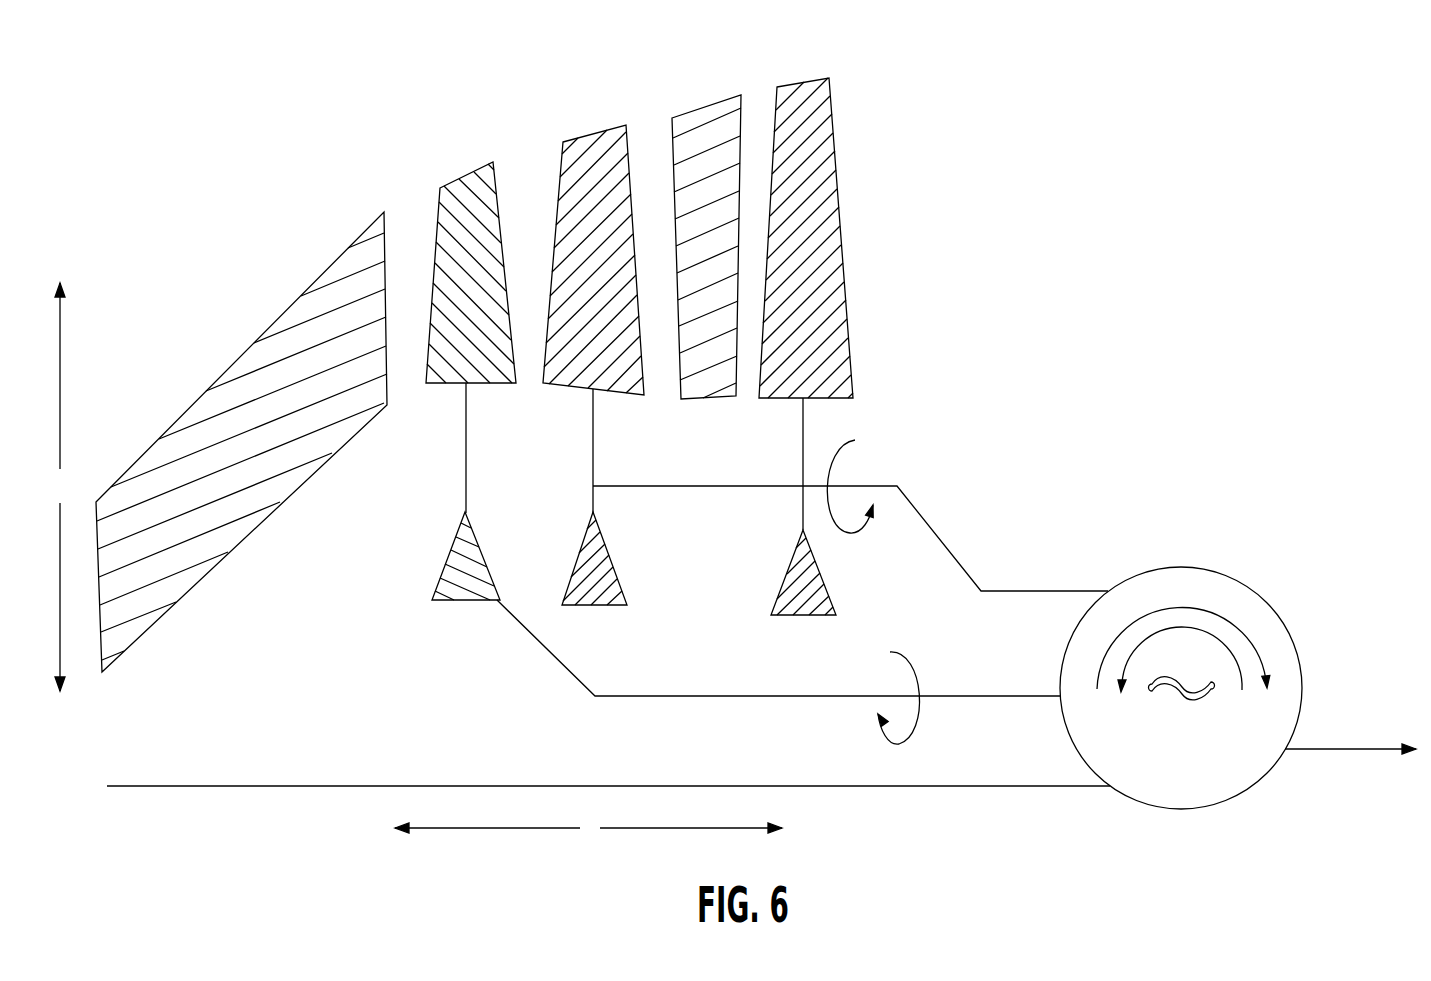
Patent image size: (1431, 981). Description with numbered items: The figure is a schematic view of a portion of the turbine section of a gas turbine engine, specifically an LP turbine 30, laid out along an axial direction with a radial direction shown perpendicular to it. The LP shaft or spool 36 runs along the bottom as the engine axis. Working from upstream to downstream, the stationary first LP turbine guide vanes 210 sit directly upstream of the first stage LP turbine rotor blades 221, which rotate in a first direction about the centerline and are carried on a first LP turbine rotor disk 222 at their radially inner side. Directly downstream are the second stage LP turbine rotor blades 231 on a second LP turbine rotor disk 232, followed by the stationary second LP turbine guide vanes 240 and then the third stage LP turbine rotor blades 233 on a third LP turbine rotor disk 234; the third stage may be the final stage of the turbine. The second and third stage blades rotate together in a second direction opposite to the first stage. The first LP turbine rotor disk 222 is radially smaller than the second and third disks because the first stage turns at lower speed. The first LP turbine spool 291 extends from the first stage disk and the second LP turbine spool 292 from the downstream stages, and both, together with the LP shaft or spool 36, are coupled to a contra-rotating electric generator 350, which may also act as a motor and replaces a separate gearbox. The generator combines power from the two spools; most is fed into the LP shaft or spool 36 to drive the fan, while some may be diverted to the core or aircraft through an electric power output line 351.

The LP turbine 30 is at (242, 127).
The LP shaft or spool 36 is at (253, 785).
The first LP turbine guide vanes 210 is at (206, 406).
The first stage LP turbine rotor blades 221 is at (465, 188).
The first LP turbine rotor disk 222 is at (457, 555).
The second stage LP turbine rotor blades 231 is at (575, 143).
The second LP turbine rotor disk 232 is at (597, 580).
The third stage LP turbine rotor blades 233 is at (810, 98).
The third LP turbine rotor disk 234 is at (797, 597).
The second LP turbine guide vanes 240 is at (715, 120).
The first LP turbine spool 291 is at (552, 657).
The second LP turbine spool 292 is at (936, 534).
The contra-rotating electric generator 350 is at (1245, 535).
The electric power output line 351 is at (1347, 749).